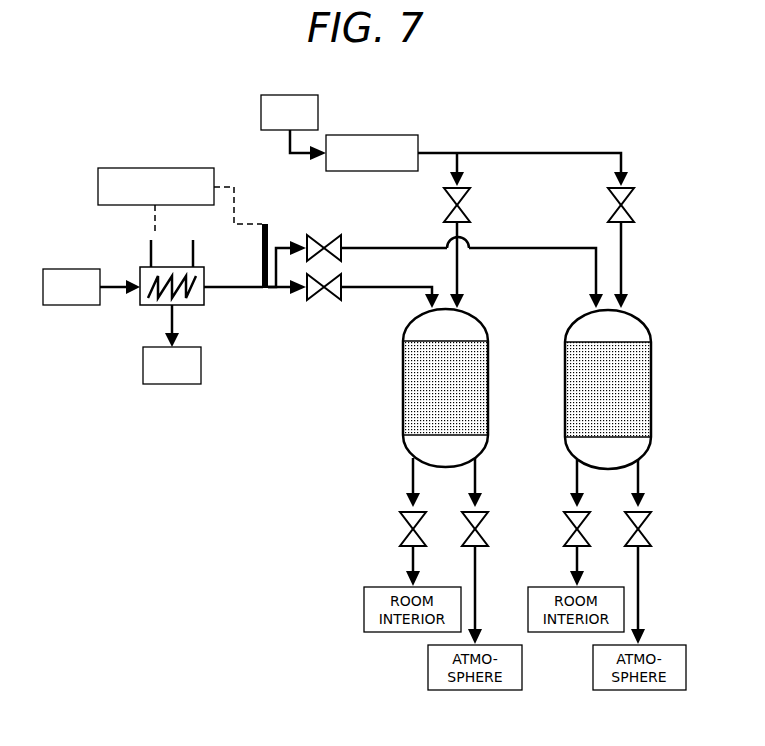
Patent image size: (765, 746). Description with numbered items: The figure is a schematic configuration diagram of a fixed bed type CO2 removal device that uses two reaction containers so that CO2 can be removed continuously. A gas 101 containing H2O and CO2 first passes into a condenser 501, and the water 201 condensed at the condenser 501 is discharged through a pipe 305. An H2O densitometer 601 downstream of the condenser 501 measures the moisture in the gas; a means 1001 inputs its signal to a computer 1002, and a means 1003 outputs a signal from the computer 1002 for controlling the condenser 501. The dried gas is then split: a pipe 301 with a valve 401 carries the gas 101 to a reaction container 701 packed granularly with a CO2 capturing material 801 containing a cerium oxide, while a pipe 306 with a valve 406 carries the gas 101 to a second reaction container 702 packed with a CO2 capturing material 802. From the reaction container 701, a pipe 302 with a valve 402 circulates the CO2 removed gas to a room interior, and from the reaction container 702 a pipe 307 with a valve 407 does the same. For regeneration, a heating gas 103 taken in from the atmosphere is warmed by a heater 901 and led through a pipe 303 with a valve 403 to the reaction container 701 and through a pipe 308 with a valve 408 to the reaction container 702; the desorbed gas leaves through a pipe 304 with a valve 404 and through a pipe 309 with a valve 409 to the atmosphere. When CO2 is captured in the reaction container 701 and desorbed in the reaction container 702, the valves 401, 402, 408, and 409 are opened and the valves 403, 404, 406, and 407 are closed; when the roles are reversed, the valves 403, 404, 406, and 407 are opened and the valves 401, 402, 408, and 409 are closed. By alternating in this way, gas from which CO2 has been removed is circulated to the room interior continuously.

The gas 101 is at (71, 287).
The heating gas 103 is at (289, 112).
The water 201 is at (172, 365).
The pipe 301 is at (384, 290).
The pipe 302 is at (410, 565).
The pipe 303 is at (459, 290).
The pipe 304 is at (477, 598).
The pipe 305 is at (192, 326).
The pipe 306 is at (396, 246).
The pipe 307 is at (574, 565).
The pipe 308 is at (623, 268).
The pipe 309 is at (640, 598).
The valve 401 is at (317, 300).
The valve 402 is at (404, 524).
The valve 403 is at (470, 196).
The valve 404 is at (488, 514).
The valve 406 is at (336, 236).
The valve 407 is at (569, 524).
The valve 408 is at (634, 196).
The valve 409 is at (651, 514).
The condenser 501 is at (204, 267).
The H2O densitometer 601 is at (268, 236).
The reaction container 701 is at (467, 388).
The reaction container 702 is at (631, 389).
The CO2 capturing material 801 is at (503, 374).
The CO2 capturing material 802 is at (667, 376).
The heater 901 is at (378, 135).
The means for inputting a signal 1001 is at (236, 186).
The computer 1002 is at (142, 168).
The means for outputting a signal 1003 is at (150, 237).